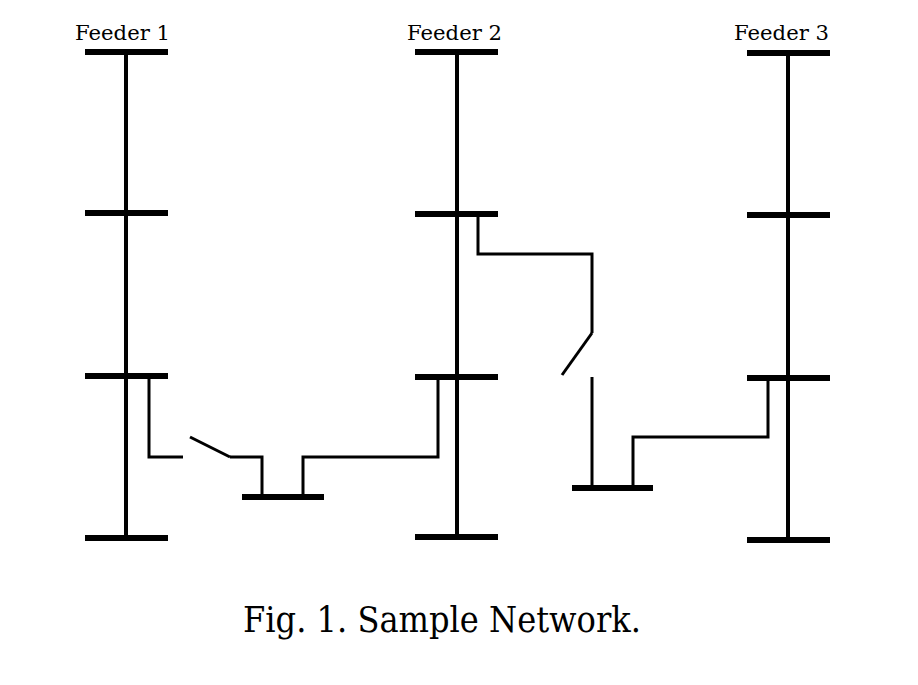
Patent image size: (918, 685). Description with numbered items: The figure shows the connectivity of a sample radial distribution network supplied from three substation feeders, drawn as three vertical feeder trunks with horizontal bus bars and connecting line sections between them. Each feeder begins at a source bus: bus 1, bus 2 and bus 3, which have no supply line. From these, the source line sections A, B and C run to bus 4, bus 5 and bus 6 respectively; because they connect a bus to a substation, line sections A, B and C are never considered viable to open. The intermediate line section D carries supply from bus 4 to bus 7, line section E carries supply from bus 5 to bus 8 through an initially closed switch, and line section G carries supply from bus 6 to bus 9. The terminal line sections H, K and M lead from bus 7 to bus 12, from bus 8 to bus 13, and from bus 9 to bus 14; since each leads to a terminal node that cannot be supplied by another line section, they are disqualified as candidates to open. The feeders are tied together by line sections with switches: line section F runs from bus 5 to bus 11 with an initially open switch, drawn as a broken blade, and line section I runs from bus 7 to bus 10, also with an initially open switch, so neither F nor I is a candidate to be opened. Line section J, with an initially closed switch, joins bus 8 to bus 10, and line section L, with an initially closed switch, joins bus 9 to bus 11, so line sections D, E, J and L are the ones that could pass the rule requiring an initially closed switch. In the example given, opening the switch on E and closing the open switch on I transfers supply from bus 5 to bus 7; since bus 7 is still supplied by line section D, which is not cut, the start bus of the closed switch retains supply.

The bus 1 is at (117, 53).
The bus 2 is at (447, 53).
The bus 3 is at (778, 53).
The bus 4 is at (117, 215).
The bus 5 is at (447, 216).
The bus 6 is at (778, 217).
The bus 7 is at (117, 378).
The bus 8 is at (448, 379).
The bus 9 is at (780, 381).
The bus 10 is at (268, 498).
The bus 11 is at (600, 490).
The bus 12 is at (109, 541).
The bus 13 is at (443, 543).
The bus 14 is at (774, 543).
The line section A is at (138, 132).
The line section B is at (469, 133).
The line section C is at (799, 134).
The line section D is at (139, 294).
The line section E is at (469, 295).
The line section F is at (547, 351).
The line section G is at (799, 296).
The line section H is at (140, 457).
The line section I is at (205, 436).
The line section J is at (370, 437).
The line section K is at (469, 457).
The line section L is at (700, 433).
The line section M is at (803, 459).